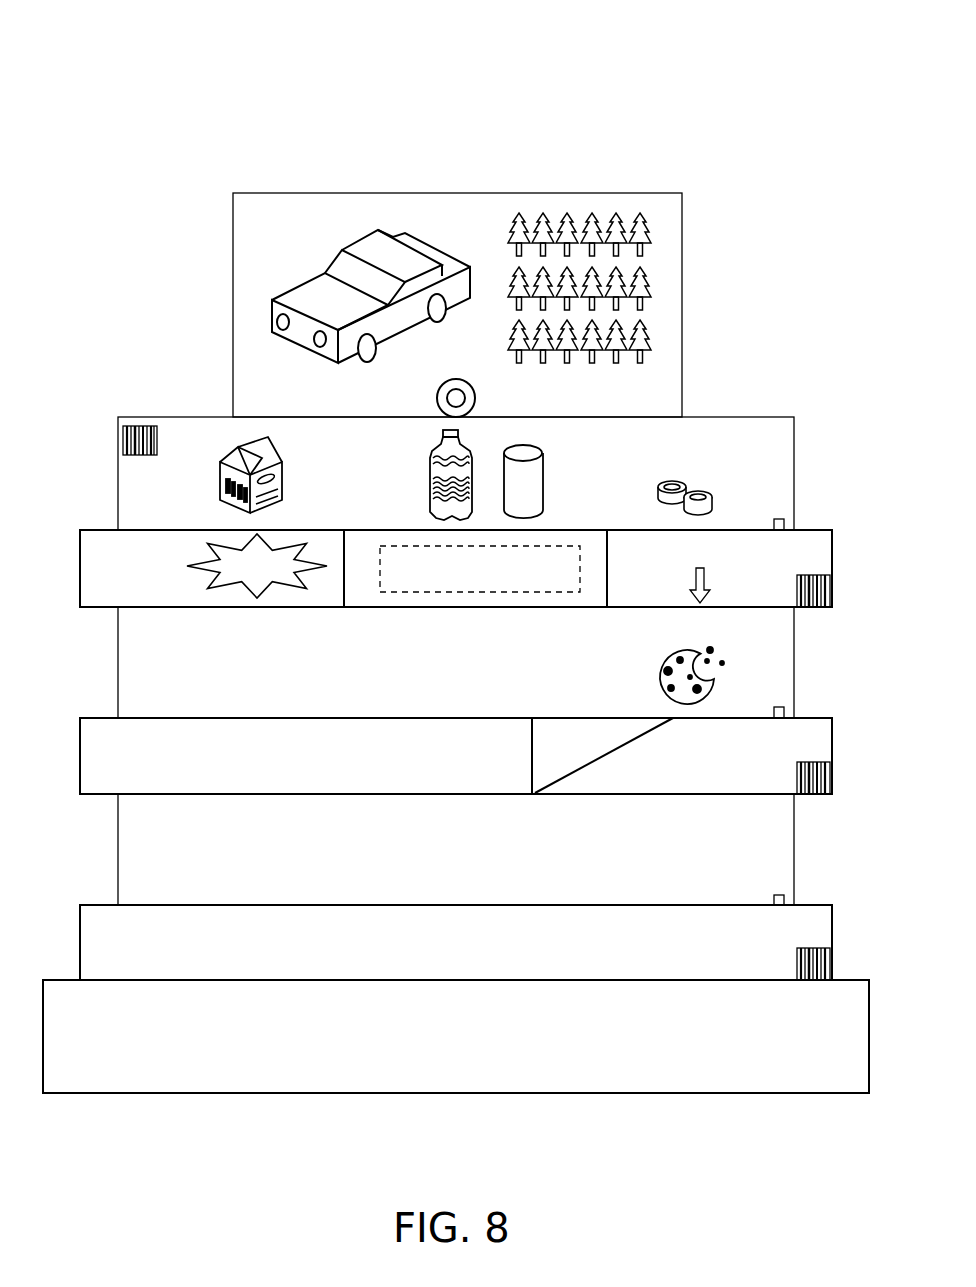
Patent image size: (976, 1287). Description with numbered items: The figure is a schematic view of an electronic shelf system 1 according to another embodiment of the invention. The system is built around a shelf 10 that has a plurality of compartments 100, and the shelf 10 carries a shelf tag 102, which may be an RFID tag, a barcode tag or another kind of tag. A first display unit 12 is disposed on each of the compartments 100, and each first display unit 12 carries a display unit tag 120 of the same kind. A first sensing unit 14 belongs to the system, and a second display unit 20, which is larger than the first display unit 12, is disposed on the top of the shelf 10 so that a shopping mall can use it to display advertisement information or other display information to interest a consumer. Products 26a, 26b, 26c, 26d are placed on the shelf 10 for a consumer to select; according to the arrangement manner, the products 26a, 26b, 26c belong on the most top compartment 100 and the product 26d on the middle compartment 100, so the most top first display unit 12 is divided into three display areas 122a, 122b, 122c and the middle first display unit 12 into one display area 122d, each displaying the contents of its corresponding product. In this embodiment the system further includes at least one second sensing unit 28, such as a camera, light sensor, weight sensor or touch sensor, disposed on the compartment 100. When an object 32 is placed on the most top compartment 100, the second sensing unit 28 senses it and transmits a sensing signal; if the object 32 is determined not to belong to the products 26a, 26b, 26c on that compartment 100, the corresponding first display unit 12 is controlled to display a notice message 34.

The electronic shelf system 1 is at (763, 78).
The shelf 10 is at (180, 417).
The first display unit 12 is at (80, 565).
The first sensing unit 14 is at (476, 398).
The second display unit 20 is at (478, 193).
The product 26a is at (283, 477).
The product 26b is at (432, 467).
The product 26c is at (708, 500).
The product 26d is at (717, 684).
The second sensing unit 28 is at (786, 526).
The object 32 is at (545, 490).
The notice message 34 is at (523, 594).
The compartment 100 is at (782, 458).
The shelf tag 102 is at (123, 441).
The display unit tag 120 is at (833, 592).
The display area 122a is at (165, 601).
The display area 122b is at (370, 600).
The display area 122c is at (815, 548).
The display area 122d is at (815, 737).